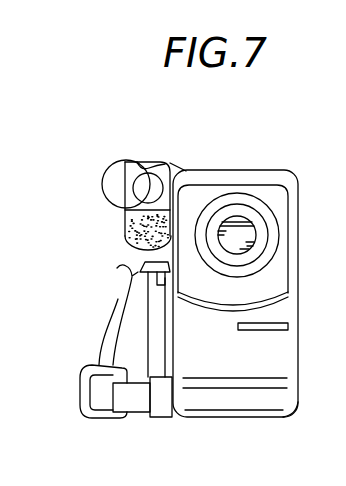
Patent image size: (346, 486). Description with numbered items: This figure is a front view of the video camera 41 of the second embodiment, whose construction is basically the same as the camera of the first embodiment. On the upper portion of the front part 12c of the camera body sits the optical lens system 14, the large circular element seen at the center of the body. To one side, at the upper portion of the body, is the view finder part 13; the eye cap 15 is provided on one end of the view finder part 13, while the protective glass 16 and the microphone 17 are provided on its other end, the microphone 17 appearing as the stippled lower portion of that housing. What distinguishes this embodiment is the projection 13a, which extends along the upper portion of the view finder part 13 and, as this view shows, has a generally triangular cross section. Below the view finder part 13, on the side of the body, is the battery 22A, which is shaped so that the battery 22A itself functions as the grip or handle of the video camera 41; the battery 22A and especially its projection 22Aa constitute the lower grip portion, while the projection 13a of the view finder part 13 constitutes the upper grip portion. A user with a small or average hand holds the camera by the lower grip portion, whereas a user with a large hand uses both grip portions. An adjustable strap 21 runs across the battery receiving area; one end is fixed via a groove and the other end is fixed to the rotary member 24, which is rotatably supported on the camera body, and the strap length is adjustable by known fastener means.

The video camera 41 is at (293, 138).
The optical lens system 14 is at (232, 245).
The front part 12c is at (277, 400).
The view finder part 13 is at (132, 195).
The projection 13a is at (137, 162).
The eye cap 15 is at (120, 170).
The protective glass 16 is at (152, 180).
The microphone 17 is at (133, 232).
The projection 22Aa is at (117, 268).
The battery 22A is at (118, 347).
The adjustable strap 21 is at (135, 395).
The rotary member 24 is at (165, 402).